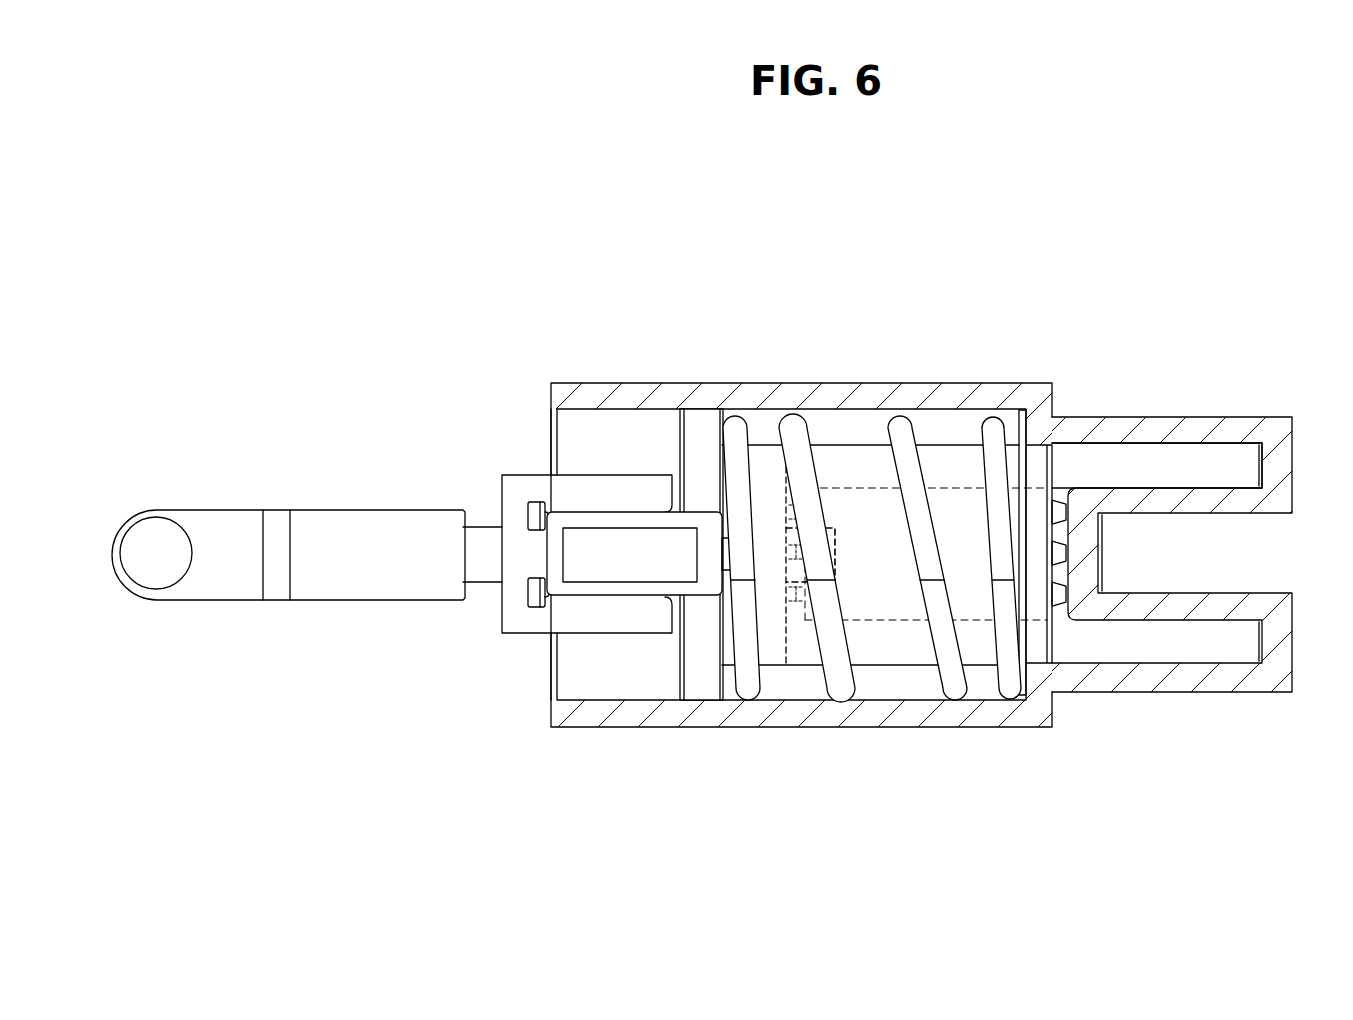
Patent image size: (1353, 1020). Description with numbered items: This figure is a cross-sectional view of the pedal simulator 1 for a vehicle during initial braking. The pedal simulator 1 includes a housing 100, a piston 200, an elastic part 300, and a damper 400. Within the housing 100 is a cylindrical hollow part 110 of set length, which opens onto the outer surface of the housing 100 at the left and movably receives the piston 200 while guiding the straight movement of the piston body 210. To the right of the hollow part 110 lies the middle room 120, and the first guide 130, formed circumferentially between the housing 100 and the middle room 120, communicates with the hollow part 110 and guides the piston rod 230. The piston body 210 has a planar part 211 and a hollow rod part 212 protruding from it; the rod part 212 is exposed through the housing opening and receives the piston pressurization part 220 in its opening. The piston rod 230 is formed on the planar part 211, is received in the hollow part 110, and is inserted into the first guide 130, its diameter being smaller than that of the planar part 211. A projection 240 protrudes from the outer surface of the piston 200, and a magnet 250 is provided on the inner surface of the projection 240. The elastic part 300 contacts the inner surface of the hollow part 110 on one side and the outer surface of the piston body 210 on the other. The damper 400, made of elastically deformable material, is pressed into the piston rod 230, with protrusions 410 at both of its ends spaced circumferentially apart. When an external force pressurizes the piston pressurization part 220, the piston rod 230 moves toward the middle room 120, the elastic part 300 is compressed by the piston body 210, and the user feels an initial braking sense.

The pedal simulator 1 is at (1231, 176).
The housing 100 is at (774, 528).
The hollow part 110 is at (892, 683).
The middle room 120 is at (1068, 544).
The first guide 130 is at (1195, 450).
The piston 200 is at (565, 527).
The piston body 210 is at (593, 527).
The planar part 211 is at (698, 430).
The rod part 212 is at (567, 551).
The piston pressurization part 220 is at (383, 572).
The piston rod 230 is at (940, 445).
The projection 240 is at (652, 585).
The magnet 250 is at (593, 552).
The elastic part 300 is at (952, 682).
The damper 400 is at (843, 488).
The protrusion 410 is at (788, 518).